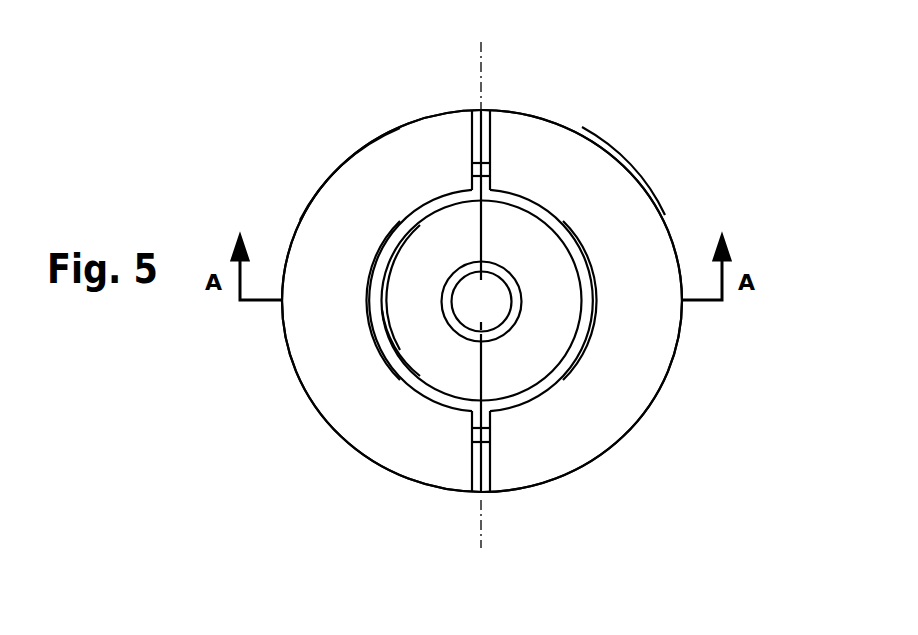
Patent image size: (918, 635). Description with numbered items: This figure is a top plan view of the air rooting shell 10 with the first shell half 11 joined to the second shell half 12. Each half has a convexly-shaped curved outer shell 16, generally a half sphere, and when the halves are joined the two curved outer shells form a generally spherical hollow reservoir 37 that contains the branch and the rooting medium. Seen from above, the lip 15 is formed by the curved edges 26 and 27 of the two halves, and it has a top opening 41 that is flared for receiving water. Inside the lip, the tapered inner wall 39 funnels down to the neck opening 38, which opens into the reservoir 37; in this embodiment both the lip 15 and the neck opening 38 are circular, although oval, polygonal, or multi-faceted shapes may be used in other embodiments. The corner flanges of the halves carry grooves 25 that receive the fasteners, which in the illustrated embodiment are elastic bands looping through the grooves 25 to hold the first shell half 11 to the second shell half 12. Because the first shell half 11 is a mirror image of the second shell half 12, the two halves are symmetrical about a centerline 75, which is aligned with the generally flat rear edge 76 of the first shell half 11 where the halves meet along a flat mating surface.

The air rooting shell 10 is at (606, 82).
The first shell half 11 is at (337, 178).
The second shell half 12 is at (632, 195).
The lip 15 is at (540, 212).
The curved outer shell 16 is at (400, 206).
The grooves 25 is at (491, 170).
The curved edge 26 is at (383, 262).
The curved edge 27 is at (585, 256).
The reservoir 37 is at (495, 314).
The neck opening 38 is at (487, 267).
The tapered inner wall 39 is at (446, 275).
The top opening 41 is at (412, 333).
The centerline 75 is at (483, 52).
The rear edge 76 is at (480, 108).